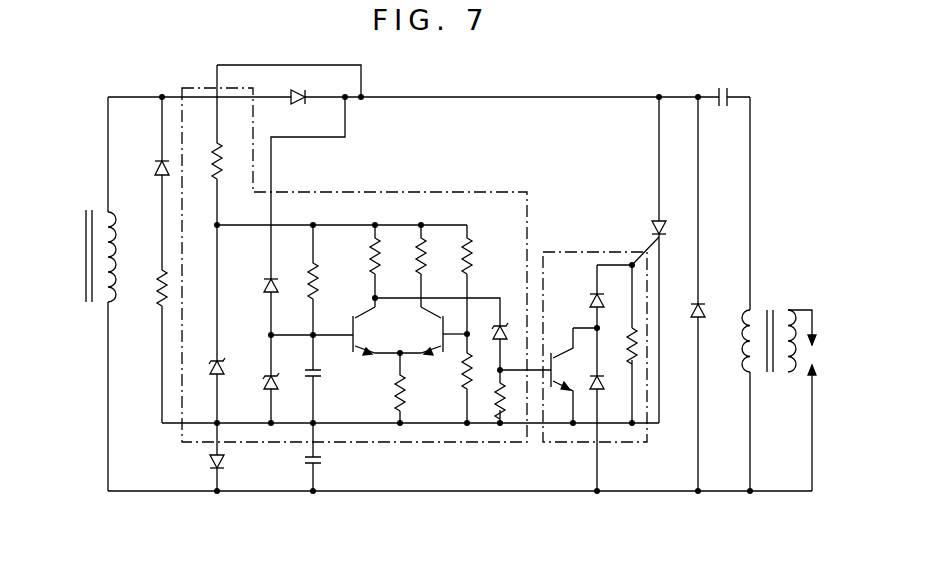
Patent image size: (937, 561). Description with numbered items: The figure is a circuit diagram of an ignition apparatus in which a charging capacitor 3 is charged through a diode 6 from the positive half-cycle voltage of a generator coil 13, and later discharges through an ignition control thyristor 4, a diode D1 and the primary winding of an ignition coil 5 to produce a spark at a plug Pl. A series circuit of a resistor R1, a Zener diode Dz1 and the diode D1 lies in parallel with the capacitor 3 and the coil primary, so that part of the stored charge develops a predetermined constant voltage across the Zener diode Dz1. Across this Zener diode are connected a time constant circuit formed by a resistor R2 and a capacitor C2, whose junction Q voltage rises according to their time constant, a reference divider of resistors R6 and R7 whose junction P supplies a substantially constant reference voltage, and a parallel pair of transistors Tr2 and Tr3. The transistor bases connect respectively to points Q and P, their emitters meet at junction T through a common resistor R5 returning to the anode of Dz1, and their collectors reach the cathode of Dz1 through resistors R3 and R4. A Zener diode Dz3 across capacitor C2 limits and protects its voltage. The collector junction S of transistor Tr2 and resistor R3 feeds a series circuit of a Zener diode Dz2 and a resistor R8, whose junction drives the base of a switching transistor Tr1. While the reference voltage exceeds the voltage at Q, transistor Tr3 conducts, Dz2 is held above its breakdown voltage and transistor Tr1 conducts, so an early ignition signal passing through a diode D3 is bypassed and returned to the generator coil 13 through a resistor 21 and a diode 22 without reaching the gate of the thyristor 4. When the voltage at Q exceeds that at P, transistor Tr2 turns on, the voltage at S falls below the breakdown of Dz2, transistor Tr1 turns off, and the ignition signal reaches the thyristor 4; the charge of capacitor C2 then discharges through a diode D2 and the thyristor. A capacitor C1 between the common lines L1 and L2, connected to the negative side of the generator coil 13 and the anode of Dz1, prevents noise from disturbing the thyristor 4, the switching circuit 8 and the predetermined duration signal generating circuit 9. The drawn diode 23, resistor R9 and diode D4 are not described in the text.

The charging capacitor 3 is at (724, 87).
The ignition control thyristor 4 is at (652, 228).
The ignition coil 5 is at (773, 306).
The diode 6 is at (299, 93).
The switching circuit 8 is at (578, 252).
The predetermined duration signal generating circuit 9 is at (438, 190).
The generator coil 13 is at (90, 205).
The resistor 21 is at (159, 284).
The diode 22 is at (157, 165).
The diode 23 is at (706, 311).
The resistor R1 is at (221, 157).
The resistor R2 is at (315, 280).
The resistor R3 is at (378, 264).
The resistor R4 is at (424, 264).
The common resistor R5 is at (405, 386).
The resistor R6 is at (470, 264).
The resistor R7 is at (469, 374).
The resistor R8 is at (507, 404).
The resistor R9 is at (631, 346).
The diode D1 is at (210, 462).
The diode D2 is at (265, 290).
The diode D3 is at (606, 377).
The diode D4 is at (590, 299).
The Zener diode Dz1 is at (226, 368).
The Zener diode Dz2 is at (510, 326).
The Zener diode Dz3 is at (264, 380).
The capacitor C1 is at (320, 462).
The capacitor C2 is at (320, 374).
The switching transistor Tr1 is at (556, 370).
The transistor Tr2 is at (357, 338).
The transistor Tr3 is at (441, 338).
The common line L1 is at (450, 492).
The common line L2 is at (385, 425).
The junction point P is at (469, 334).
The junction point Q is at (313, 335).
The junction point S is at (377, 300).
The junction point T is at (398, 356).
The plug Pl is at (836, 364).